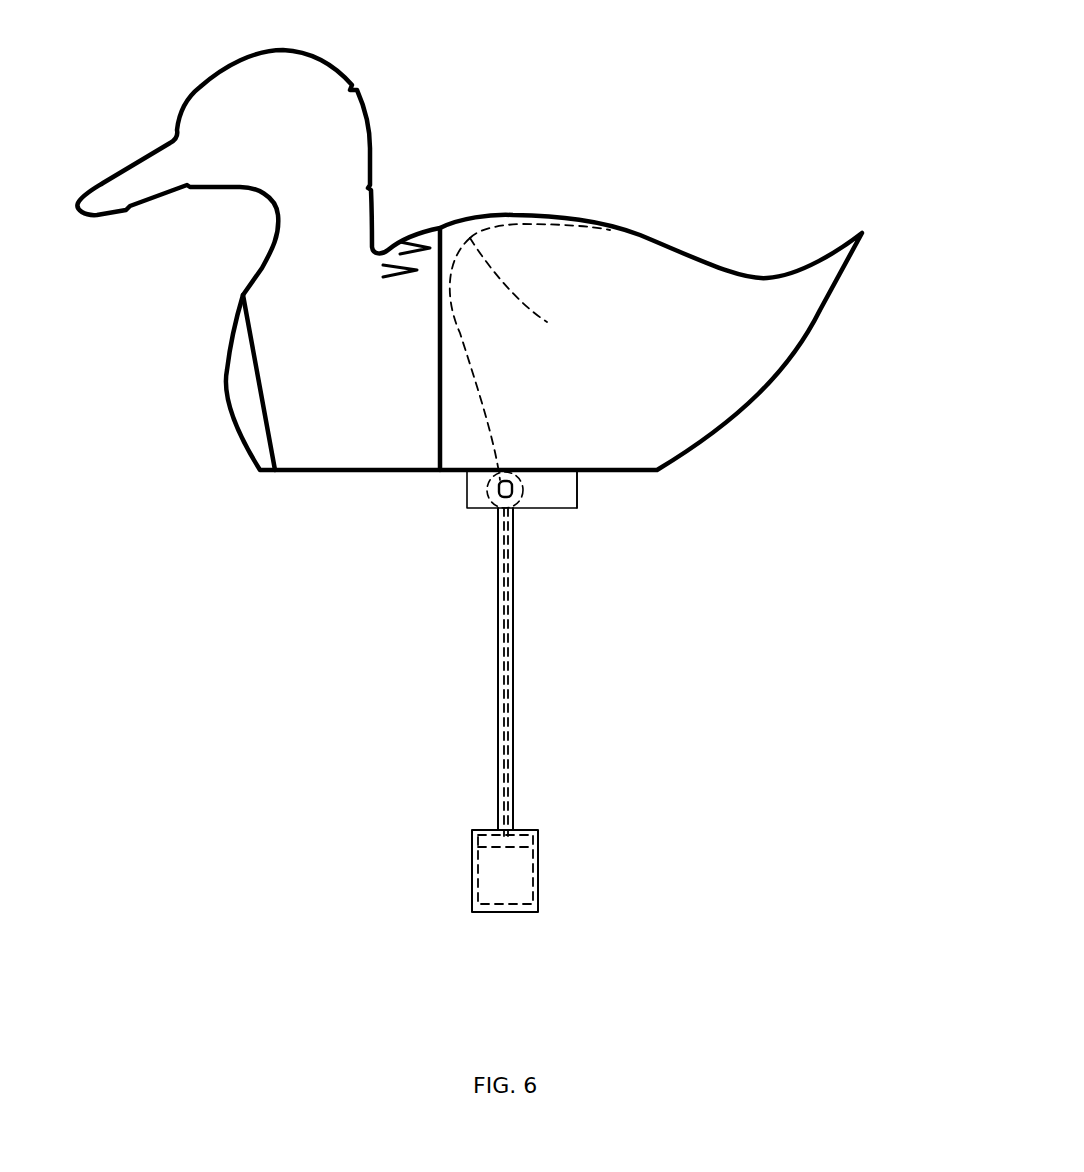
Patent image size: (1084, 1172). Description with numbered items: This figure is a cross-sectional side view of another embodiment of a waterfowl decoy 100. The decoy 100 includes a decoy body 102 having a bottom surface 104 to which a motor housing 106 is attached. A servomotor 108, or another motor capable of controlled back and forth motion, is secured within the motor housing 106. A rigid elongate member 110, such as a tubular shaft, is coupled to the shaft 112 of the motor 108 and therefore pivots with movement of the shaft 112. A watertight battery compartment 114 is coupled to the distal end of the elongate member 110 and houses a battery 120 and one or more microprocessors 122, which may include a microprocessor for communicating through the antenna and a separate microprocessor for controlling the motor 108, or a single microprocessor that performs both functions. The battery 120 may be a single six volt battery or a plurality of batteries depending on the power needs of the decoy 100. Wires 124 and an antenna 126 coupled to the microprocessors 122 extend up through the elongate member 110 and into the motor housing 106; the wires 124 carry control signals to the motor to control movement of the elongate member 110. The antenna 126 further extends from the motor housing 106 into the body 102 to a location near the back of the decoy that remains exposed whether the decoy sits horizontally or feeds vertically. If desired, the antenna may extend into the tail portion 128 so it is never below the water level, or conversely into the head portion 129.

The decoy 100 is at (457, 166).
The decoy body 102 is at (655, 238).
The bottom surface 104 is at (627, 473).
The motor housing 106 is at (577, 508).
The servomotor 108 is at (463, 492).
The rigid elongate member 110 is at (512, 655).
The shaft 112 is at (512, 508).
The watertight battery compartment 114 is at (538, 870).
The battery 120 is at (538, 903).
The microprocessors 122 is at (537, 832).
The wires 124 is at (513, 788).
The antenna 126 is at (428, 770).
The tail portion 128 is at (818, 265).
The head portion 129 is at (342, 66).